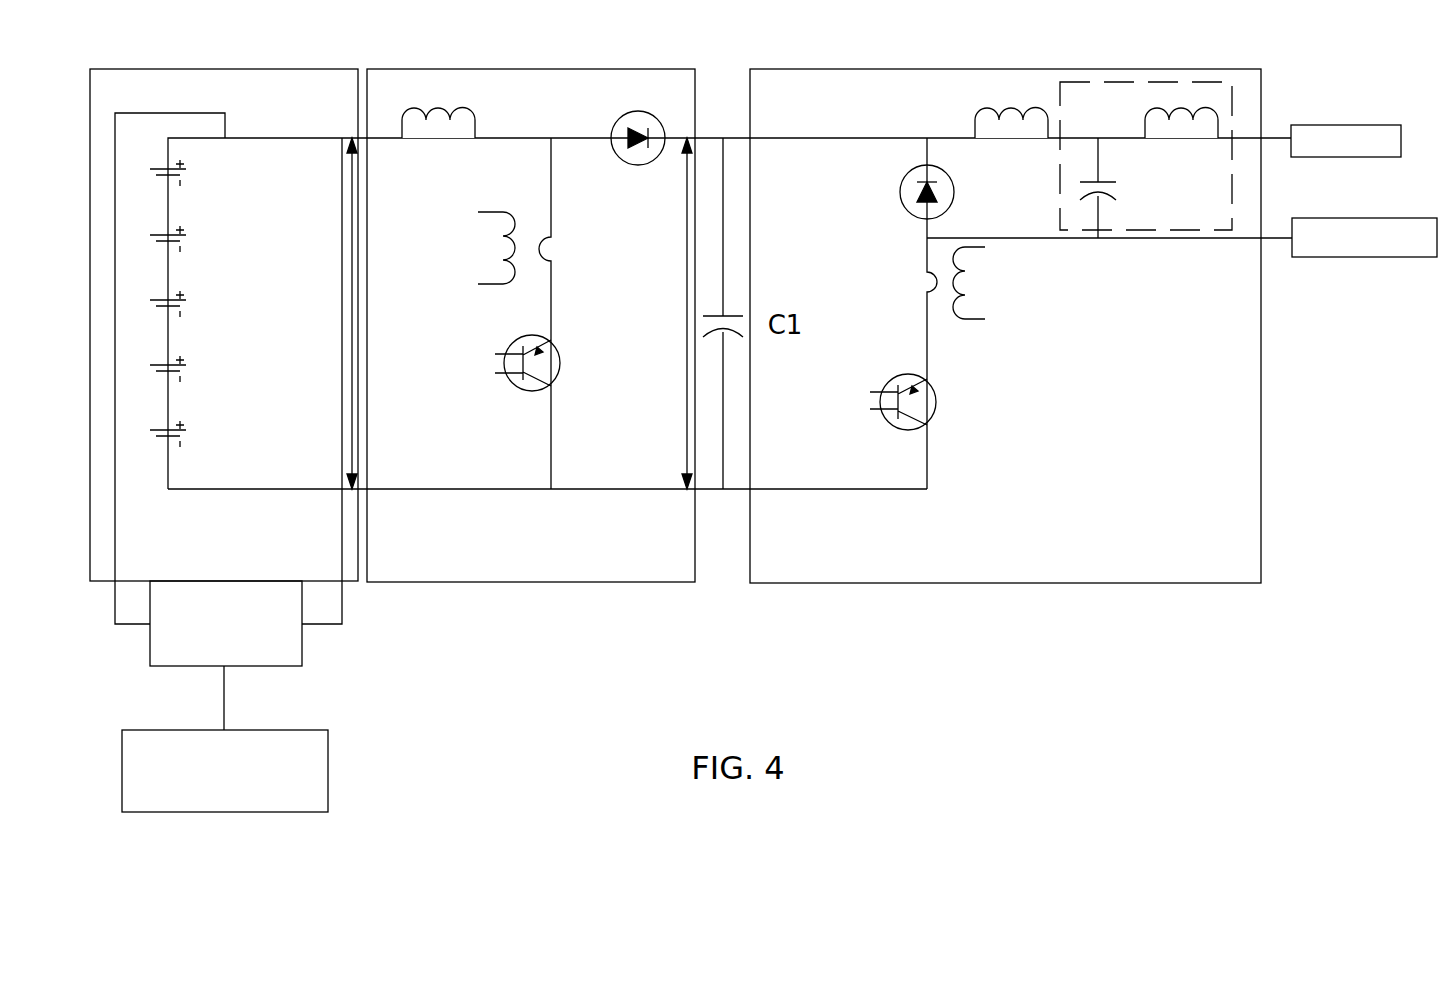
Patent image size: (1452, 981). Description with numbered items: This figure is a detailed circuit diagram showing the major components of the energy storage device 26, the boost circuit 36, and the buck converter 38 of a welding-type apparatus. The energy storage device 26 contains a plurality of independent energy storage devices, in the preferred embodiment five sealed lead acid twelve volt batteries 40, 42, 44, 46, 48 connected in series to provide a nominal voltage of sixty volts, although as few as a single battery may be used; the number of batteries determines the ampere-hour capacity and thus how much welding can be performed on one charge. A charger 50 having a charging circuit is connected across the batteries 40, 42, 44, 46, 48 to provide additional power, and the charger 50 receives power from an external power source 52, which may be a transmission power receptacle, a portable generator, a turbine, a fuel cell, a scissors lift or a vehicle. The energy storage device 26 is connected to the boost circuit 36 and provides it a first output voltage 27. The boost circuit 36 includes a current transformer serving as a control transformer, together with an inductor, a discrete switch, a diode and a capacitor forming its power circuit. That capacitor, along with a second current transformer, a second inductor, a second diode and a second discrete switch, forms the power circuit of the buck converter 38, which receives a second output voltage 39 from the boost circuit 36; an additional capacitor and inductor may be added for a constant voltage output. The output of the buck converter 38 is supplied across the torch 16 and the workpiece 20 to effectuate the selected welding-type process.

The energy storage device 26 is at (223, 69).
The first output voltage 27 is at (352, 475).
The boost circuit 36 is at (540, 69).
The buck converter 38 is at (1003, 69).
The second output voltage 39 is at (687, 475).
The battery 40 is at (186, 172).
The battery 42 is at (186, 238).
The battery 44 is at (186, 303).
The battery 46 is at (186, 368).
The battery 48 is at (186, 433).
The charger 50 is at (302, 646).
The external power source 52 is at (328, 767).
The torch 16 is at (1345, 125).
The workpiece 20 is at (1363, 218).